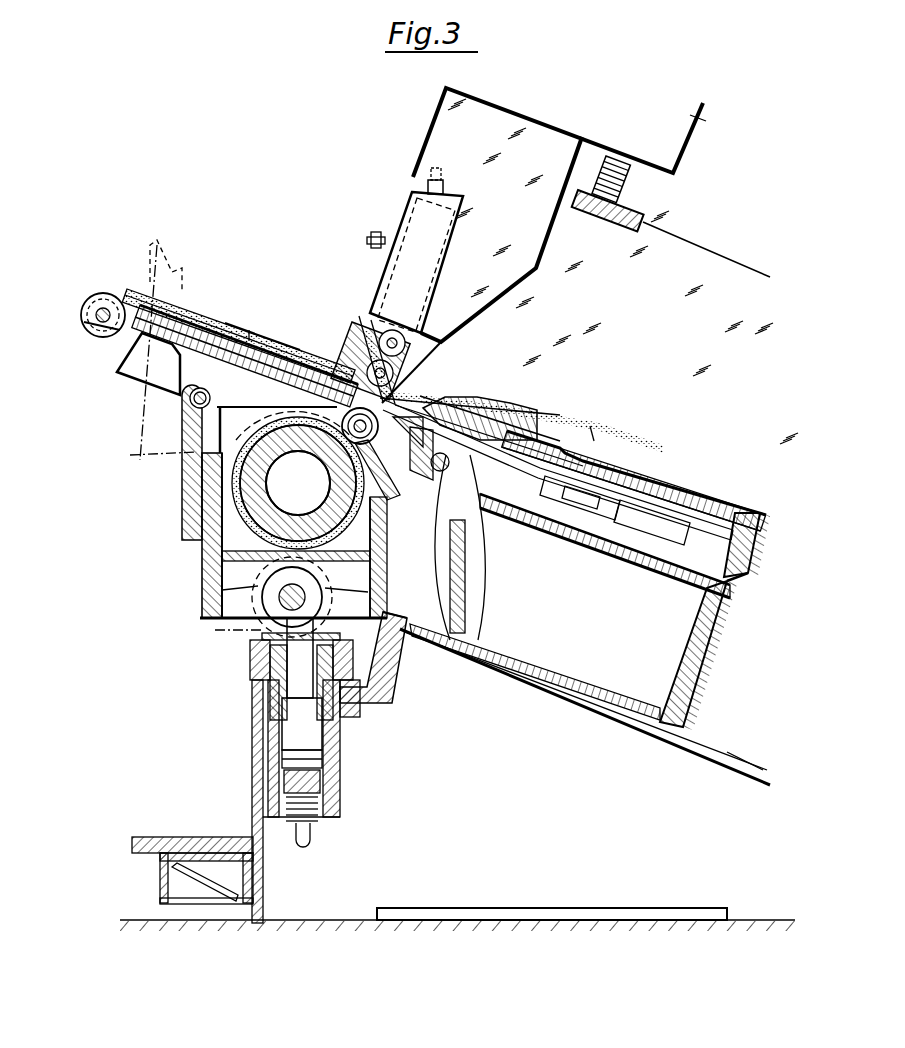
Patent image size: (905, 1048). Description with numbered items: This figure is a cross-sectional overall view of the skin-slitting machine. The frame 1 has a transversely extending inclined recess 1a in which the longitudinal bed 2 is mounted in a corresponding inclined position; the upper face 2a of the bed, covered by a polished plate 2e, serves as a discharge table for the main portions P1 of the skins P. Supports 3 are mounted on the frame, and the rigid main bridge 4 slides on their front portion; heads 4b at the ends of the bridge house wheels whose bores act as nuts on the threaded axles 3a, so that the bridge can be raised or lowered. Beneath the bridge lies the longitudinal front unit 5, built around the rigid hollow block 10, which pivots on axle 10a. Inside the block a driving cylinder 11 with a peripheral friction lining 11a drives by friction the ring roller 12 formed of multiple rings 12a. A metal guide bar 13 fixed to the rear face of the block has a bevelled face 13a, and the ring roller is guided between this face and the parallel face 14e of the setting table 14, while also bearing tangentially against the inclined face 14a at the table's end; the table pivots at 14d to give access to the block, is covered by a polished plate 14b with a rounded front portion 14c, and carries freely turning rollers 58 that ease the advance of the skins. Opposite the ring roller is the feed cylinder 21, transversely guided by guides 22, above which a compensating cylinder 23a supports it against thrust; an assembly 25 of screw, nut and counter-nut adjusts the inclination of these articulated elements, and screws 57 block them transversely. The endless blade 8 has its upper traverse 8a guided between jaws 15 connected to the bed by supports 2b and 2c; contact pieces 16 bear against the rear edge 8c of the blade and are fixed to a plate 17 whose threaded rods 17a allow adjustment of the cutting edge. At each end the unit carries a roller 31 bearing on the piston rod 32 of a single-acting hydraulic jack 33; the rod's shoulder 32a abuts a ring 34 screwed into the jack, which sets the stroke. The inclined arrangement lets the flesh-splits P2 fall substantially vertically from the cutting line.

The frame 1 is at (609, 716).
The inclined cut-out portion or recess 1a is at (712, 645).
The longitudinal bed 2 is at (531, 681).
The upper face of the bed 2a is at (592, 447).
The support 2b is at (545, 404).
The support 2c is at (426, 640).
The polished plate 2e is at (700, 486).
The support 3 is at (652, 234).
The threaded axle 3a is at (641, 178).
The main bridge 4 is at (443, 117).
The head 4b is at (708, 121).
The longitudinal front unit 5 is at (198, 567).
The endless blade 8 is at (193, 868).
The upper traverse of the blade 8a is at (431, 370).
The rear edge of the blade 8c is at (493, 404).
The rigid hollow block 10 is at (236, 552).
The axle 10a is at (485, 642).
The driving roller or cylinder 11 is at (266, 582).
The peripheral friction lining 11a is at (272, 507).
The ring roller 12 is at (352, 410).
The rings 12a is at (365, 448).
The metal guide bar 13 is at (262, 493).
The bevel-shaped face 13a is at (262, 472).
The setting or fixing table 14 is at (167, 303).
The inclined face 14a is at (343, 372).
The polished plate 14b is at (318, 388).
The rounded portion 14c is at (91, 329).
The pivot 14d is at (180, 394).
The face of the table 14e is at (307, 350).
The jaws 15 is at (461, 392).
The contact pieces 16 is at (519, 458).
The plate 17 is at (733, 535).
The threaded rods 17a is at (741, 583).
The feed cylinder or roller 21 is at (373, 364).
The guides 22 is at (408, 322).
The compensating cylinder 23a is at (376, 333).
The screw, nut and counter-nut assembly 25 is at (430, 184).
The roller 31 is at (217, 594).
The piston rod 32 is at (300, 651).
The shoulder 32a is at (300, 733).
The single-acting hydraulic jack 33 is at (268, 713).
The ring 34 is at (256, 669).
The screws 57 is at (376, 232).
The rollers 58 is at (99, 297).
The skins P is at (452, 383).
The main portions of the skins P1 is at (590, 424).
The secondary thicknesses or flesh-splits P2 is at (379, 657).